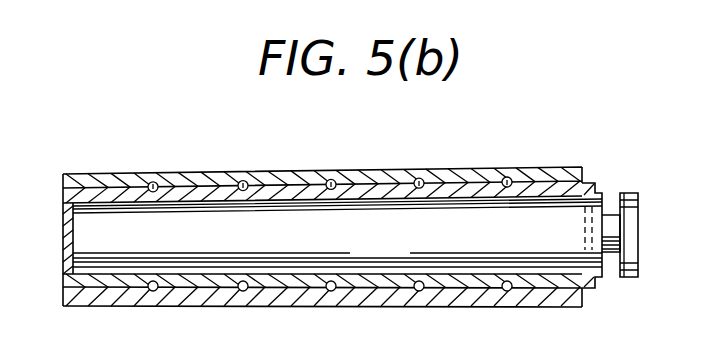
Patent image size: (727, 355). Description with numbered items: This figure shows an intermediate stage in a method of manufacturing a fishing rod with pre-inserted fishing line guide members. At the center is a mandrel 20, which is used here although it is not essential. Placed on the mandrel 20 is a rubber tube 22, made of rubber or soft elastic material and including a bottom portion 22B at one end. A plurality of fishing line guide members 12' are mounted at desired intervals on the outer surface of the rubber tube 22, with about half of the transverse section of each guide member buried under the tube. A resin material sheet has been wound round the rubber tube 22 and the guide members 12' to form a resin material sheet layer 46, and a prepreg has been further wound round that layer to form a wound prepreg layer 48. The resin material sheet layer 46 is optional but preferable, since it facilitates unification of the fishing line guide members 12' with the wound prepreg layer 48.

The bottom portion 22B is at (63, 215).
The fishing line guide members 12' is at (330, 198).
The resin material sheet layer 46 is at (285, 190).
The wound prepreg layer 48 is at (345, 178).
The rubber tube 22 is at (388, 197).
The mandrel 20 is at (395, 251).